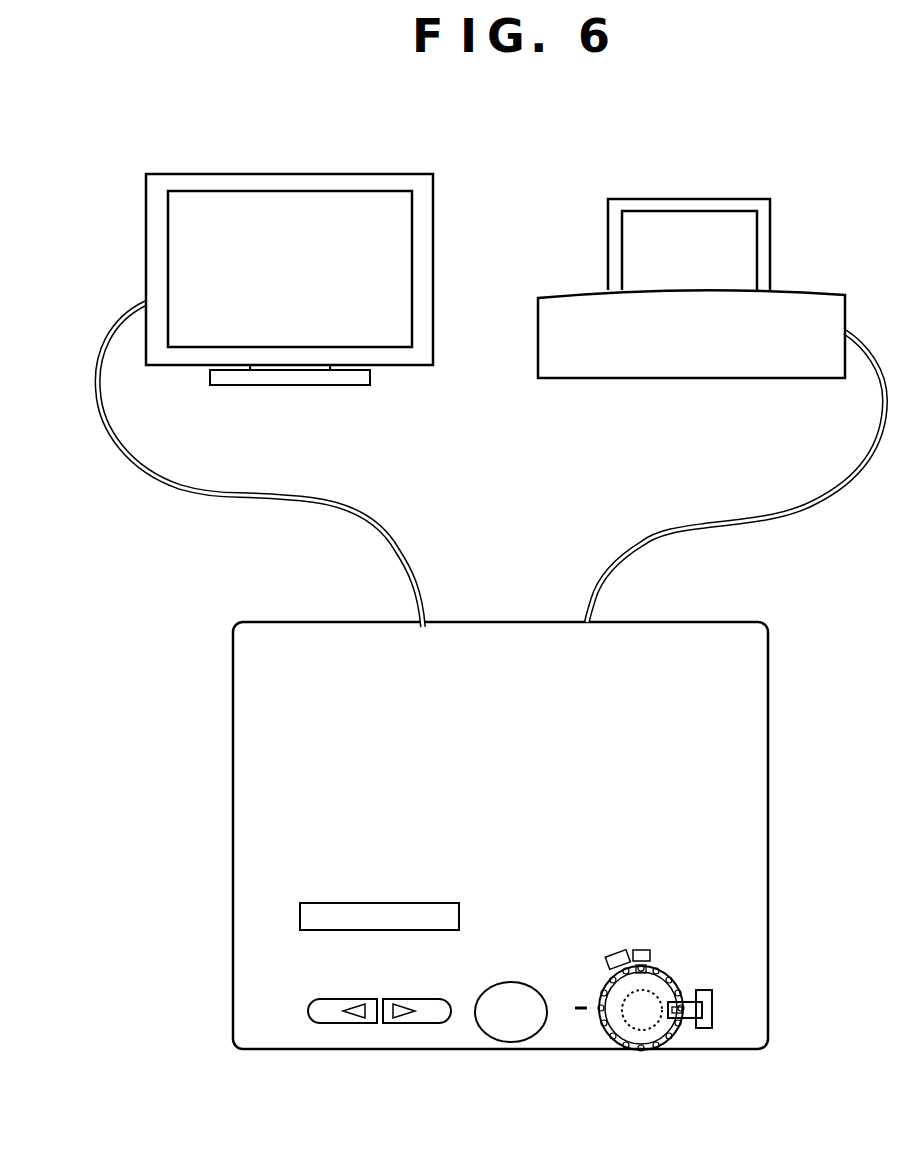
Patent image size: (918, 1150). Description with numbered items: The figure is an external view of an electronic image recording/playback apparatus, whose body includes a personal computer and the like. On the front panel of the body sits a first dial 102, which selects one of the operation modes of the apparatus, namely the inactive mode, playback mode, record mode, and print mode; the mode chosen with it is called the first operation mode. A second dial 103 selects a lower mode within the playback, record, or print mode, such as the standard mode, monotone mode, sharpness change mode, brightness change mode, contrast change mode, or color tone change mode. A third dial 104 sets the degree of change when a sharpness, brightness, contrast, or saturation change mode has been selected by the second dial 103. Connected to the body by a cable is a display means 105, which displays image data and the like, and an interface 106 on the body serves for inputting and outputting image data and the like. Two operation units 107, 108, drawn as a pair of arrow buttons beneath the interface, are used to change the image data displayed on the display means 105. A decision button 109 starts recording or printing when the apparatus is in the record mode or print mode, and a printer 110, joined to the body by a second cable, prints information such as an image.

The first dial 102 is at (668, 1043).
The second dial 103 is at (622, 1050).
The third dial 104 is at (650, 1000).
The display means 105 is at (270, 174).
The interface 106 is at (418, 903).
The operation unit 107 is at (356, 999).
The operation unit 108 is at (402, 999).
The decision button 109 is at (515, 982).
The printer 110 is at (703, 199).